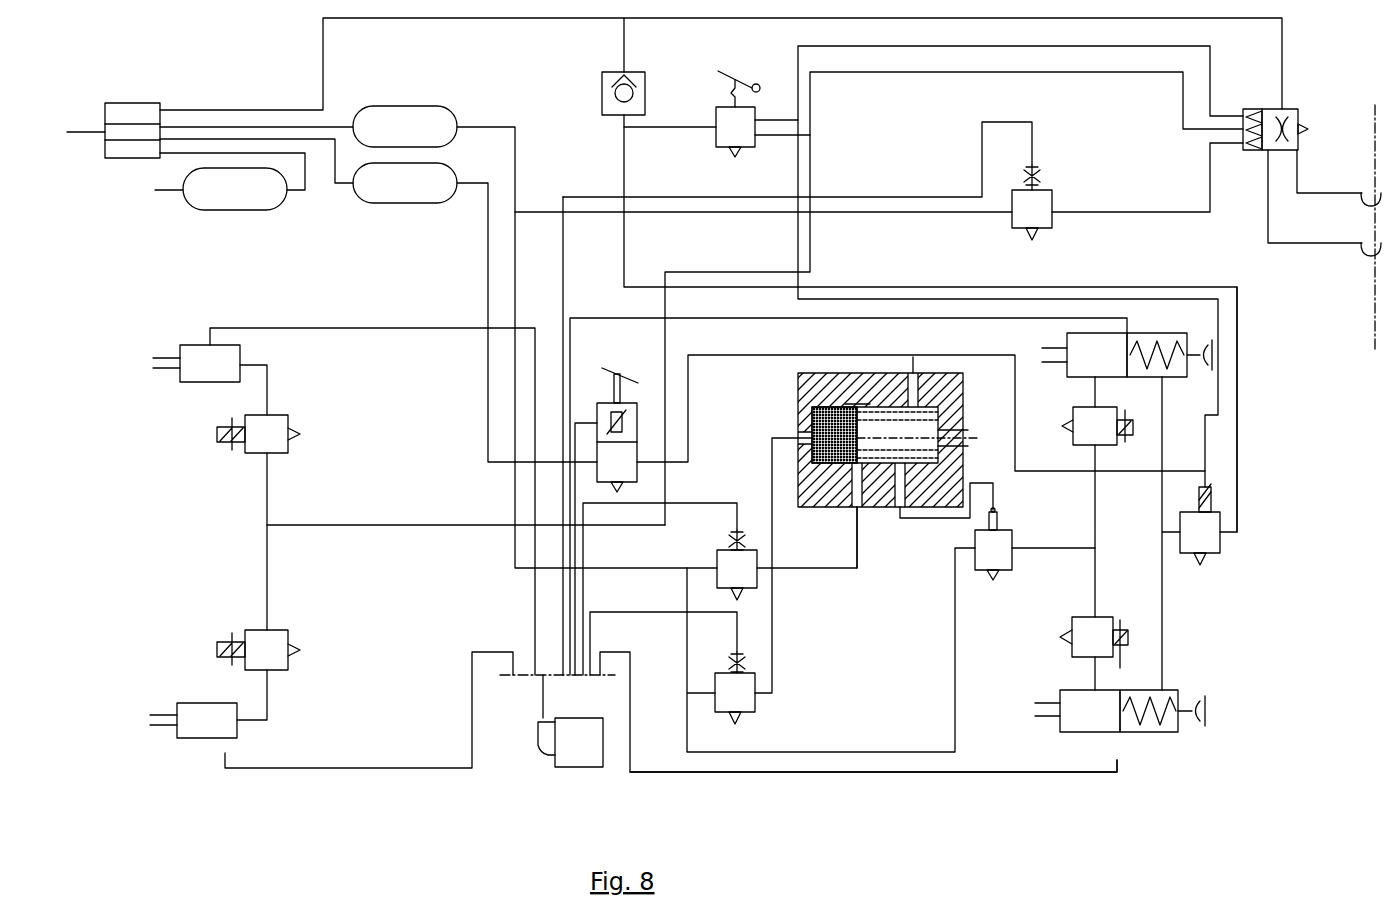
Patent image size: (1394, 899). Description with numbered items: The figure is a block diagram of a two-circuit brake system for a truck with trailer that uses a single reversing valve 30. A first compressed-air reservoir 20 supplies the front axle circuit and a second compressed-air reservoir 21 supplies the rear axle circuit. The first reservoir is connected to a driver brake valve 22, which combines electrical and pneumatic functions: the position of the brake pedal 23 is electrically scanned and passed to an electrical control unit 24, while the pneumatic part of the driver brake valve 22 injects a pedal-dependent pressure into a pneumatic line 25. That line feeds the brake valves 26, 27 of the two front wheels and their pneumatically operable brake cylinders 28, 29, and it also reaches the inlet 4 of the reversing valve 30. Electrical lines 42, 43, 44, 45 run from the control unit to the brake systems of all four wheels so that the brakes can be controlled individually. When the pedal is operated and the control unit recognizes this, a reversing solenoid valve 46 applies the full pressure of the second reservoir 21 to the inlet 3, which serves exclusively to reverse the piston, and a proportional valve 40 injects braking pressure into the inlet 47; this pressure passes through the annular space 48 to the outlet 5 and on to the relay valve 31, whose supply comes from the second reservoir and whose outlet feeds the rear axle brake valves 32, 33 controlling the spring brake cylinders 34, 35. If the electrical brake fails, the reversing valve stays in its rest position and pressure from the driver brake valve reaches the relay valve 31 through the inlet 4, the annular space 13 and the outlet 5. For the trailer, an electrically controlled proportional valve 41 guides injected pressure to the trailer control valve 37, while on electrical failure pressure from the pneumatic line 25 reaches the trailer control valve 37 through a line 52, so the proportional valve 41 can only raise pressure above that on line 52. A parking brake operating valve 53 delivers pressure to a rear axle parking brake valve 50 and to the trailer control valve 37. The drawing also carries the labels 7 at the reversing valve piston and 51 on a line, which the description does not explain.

The inlet 3 is at (805, 435).
The inlet 4 is at (918, 378).
The outlet 5 is at (900, 510).
The piston rod 7 is at (966, 440).
The annular space 13 is at (887, 407).
The first compressed-air reservoir 20 is at (428, 205).
The second compressed-air reservoir 21 is at (431, 106).
The driver brake valve 22 is at (600, 410).
The brake pedal 23 is at (606, 358).
The electrical control unit 24 is at (581, 770).
The pneumatic line 25 is at (380, 524).
The brake valve 26 is at (283, 420).
The brake valve 27 is at (283, 640).
The brake cylinder 28 is at (190, 350).
The brake cylinder 29 is at (190, 712).
The reversing valve 30 is at (805, 385).
The relay valve 31 is at (1007, 536).
The brake valve 32 is at (1080, 437).
The brake valve 33 is at (1075, 648).
The spring brake cylinder 34 is at (1080, 340).
The spring brake cylinder 35 is at (1082, 712).
The trailer control valve 37 is at (1258, 108).
The proportional valve 40 is at (760, 590).
The proportional valve 41 is at (1015, 222).
The electrical line 42 is at (357, 326).
The electrical line 43 is at (335, 770).
The electrical line 44 is at (1127, 320).
The electrical line 45 is at (1125, 763).
The reversing solenoid valve 46 is at (745, 712).
The inlet 47 is at (853, 510).
The annular space 48 is at (845, 405).
The rear axle parking brake valve 50 is at (1213, 540).
The line 51 is at (1237, 438).
The line 52 is at (1110, 72).
The operating valve 53 is at (722, 137).